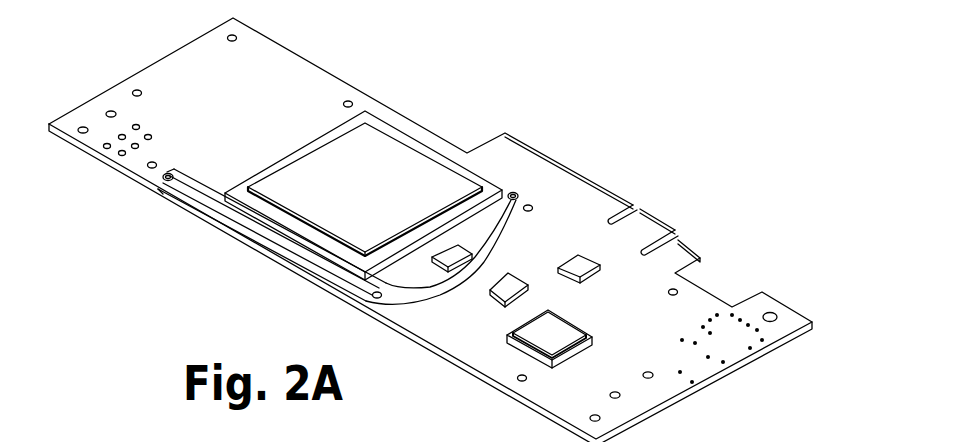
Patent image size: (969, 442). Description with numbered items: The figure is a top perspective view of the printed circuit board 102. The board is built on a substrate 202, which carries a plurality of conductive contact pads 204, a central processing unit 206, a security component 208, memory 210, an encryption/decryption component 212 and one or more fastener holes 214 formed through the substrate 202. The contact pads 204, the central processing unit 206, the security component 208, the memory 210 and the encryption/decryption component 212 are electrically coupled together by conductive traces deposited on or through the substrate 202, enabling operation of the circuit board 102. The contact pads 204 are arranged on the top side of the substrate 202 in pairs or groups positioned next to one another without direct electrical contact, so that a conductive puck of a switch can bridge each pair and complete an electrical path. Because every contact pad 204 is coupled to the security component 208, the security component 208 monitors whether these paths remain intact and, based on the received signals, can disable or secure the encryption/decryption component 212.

The printed circuit board 102 is at (793, 52).
The substrate 202 is at (200, 53).
The conductive contact pads 204 is at (166, 179).
The central processing unit (CPU) 206 is at (392, 155).
The security component 208 is at (471, 258).
The memory 210 is at (581, 262).
The encryption/decryption component 212 is at (560, 332).
The fastener holes 214 is at (235, 36).